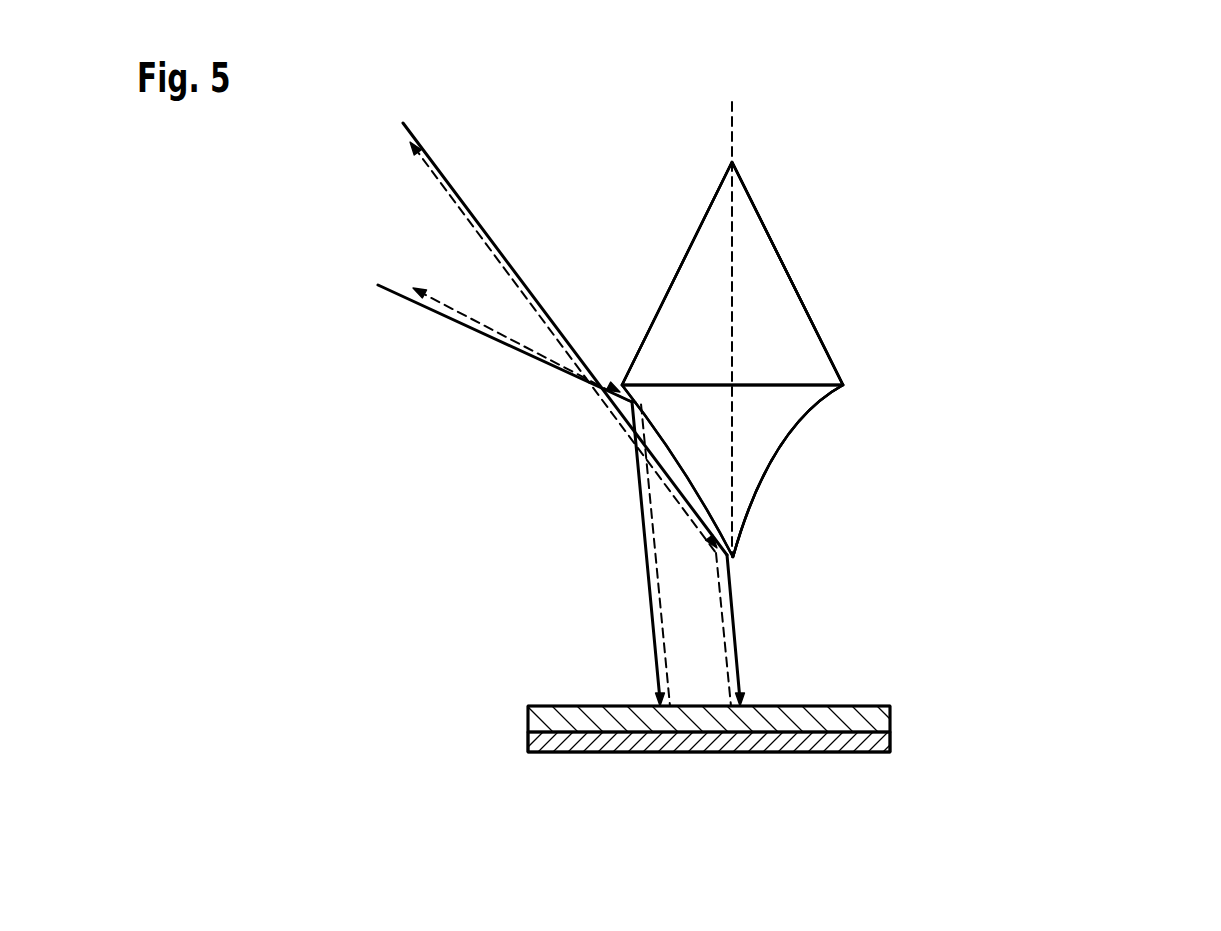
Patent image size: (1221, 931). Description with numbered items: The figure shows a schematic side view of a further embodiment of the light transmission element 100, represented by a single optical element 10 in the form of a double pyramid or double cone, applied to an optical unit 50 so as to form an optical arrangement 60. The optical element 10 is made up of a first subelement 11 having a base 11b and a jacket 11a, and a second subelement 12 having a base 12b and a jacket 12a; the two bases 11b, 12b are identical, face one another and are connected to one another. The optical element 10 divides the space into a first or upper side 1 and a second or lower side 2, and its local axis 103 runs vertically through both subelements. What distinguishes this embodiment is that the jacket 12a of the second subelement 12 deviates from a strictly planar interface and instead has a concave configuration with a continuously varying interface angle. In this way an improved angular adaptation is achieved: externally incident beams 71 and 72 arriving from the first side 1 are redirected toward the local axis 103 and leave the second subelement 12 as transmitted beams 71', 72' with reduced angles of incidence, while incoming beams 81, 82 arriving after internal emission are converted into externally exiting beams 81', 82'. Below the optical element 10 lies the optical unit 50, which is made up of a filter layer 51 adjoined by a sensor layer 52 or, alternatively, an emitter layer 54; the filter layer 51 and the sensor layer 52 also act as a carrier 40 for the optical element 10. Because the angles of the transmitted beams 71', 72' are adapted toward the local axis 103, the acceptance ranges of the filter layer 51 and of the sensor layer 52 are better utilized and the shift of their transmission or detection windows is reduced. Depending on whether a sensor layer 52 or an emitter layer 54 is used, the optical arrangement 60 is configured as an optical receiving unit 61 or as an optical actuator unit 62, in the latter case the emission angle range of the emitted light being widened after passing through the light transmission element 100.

The first side 1 is at (938, 171).
The second side 2 is at (900, 811).
The optical element 10 is at (803, 258).
The first subelement 11 is at (750, 232).
The jacket 11a is at (808, 306).
The base 11b is at (746, 392).
The second subelement 12 is at (755, 448).
The jacket 12a is at (768, 482).
The base 12b is at (775, 382).
The carrier 40 is at (452, 742).
The optical unit 50 is at (522, 705).
The filter layer 51 is at (885, 716).
The sensor layer 52 is at (885, 746).
The emitter layer 54 is at (763, 741).
The optical arrangement 60 is at (1020, 236).
The optical receiving unit 61 is at (1114, 188).
The optical actuator unit 62 is at (1148, 188).
The externally incident beam 71 is at (495, 343).
The transmitted beam 71' is at (618, 554).
The externally incident beam 72 is at (565, 339).
The transmitted beam 72' is at (781, 630).
The incoming beam 81 is at (768, 620).
The externally exiting beam 81' is at (535, 347).
The incoming beam 82 is at (619, 553).
The externally exiting beam 82' is at (520, 346).
The light transmission element 100 is at (288, 394).
The local axis 103 is at (738, 121).